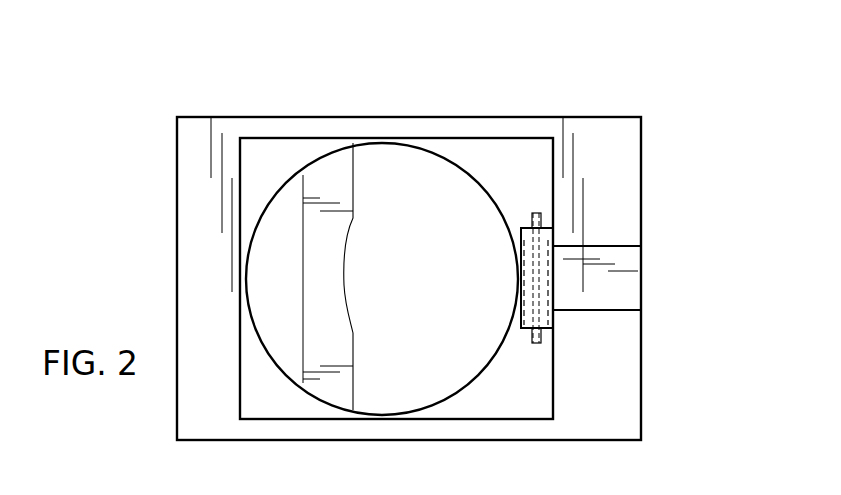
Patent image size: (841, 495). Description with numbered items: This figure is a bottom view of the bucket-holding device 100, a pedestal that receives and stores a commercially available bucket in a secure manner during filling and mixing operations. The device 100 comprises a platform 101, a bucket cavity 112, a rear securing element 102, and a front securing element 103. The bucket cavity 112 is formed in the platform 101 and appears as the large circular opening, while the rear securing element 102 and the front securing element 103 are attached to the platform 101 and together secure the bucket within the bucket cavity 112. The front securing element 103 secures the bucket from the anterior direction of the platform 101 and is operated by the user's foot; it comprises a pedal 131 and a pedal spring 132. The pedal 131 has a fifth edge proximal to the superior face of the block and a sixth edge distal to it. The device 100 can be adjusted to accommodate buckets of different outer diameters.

The bucket-holding device 100 is at (103, 118).
The platform 101 is at (583, 117).
The bucket cavity 112 is at (447, 190).
The rear securing element 102 is at (338, 190).
The front securing element 103 is at (641, 284).
The pedal 131 is at (610, 273).
The pedal spring 132 is at (540, 262).